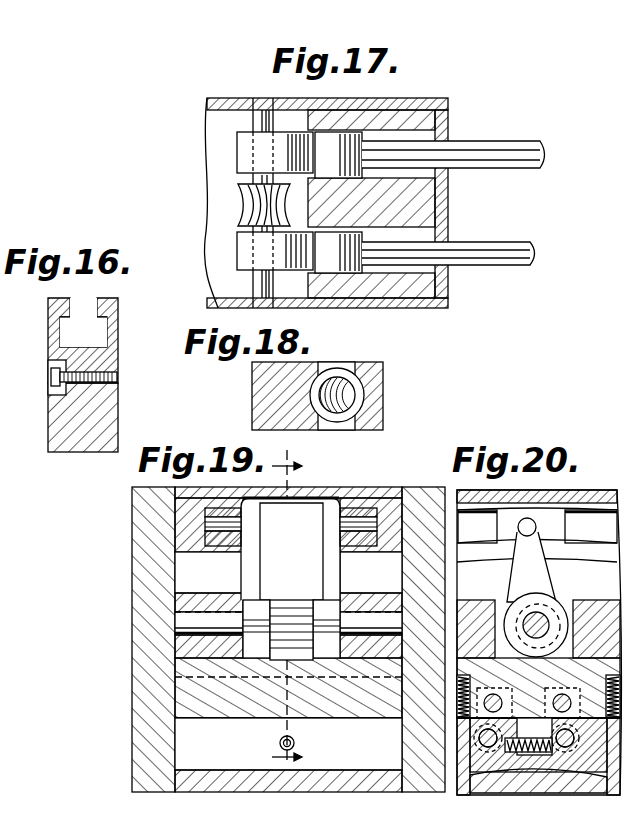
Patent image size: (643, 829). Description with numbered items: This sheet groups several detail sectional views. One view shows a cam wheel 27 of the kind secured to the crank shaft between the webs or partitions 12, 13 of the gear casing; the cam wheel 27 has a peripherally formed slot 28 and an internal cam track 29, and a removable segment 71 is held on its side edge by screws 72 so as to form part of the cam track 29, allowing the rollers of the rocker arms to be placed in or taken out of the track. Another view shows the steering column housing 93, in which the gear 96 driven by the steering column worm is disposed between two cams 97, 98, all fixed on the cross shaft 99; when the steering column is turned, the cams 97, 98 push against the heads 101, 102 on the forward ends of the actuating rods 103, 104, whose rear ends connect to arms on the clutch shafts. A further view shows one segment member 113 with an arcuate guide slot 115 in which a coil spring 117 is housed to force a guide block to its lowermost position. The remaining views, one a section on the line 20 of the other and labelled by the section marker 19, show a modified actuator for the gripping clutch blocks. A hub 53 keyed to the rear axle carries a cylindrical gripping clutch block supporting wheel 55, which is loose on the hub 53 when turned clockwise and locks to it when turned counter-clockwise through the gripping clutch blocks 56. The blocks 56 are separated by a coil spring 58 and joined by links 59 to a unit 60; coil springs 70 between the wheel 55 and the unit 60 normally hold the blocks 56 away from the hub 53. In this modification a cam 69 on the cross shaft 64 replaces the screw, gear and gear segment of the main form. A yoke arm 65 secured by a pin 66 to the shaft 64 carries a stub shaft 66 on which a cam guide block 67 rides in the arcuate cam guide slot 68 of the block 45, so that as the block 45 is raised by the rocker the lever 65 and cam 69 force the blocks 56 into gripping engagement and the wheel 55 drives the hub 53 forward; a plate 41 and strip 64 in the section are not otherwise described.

In FIG. 19, the web or partition 12 is at (132, 539).
In FIG. 19, the web or partition 13 is at (436, 496).
In FIG. 19, the section line 19 is at (8, 558).
In FIG. 19, the section line 20- 20 is at (287, 617).
In FIG. 16, the cam wheel 27 is at (55, 422).
In FIG. 16, the peripherally formed slot 28 is at (83, 306).
In FIG. 16, the internal cam track 29 is at (103, 338).
In FIG. 19, the plate 41 is at (288, 572).
In FIG. 20, the plate 41 is at (596, 562).
In FIG. 19, the block 45 is at (212, 493).
In FIG. 20, the block 45 is at (595, 497).
In FIG. 19, the hub 53 is at (208, 776).
In FIG. 20, the hub 53 is at (538, 783).
In FIG. 19, the gripping clutch block supporting wheel 55 is at (219, 601).
In FIG. 20, the gripping clutch block supporting wheel 55 is at (610, 616).
In FIG. 19, the gripping clutch block 56 is at (288, 744).
In FIG. 20, the gripping clutch block 56 is at (538, 756).
In FIG. 19, the coil spring 58 is at (295, 744).
In FIG. 20, the coil spring 58 is at (528, 736).
In FIG. 20, the link 59 is at (538, 688).
In FIG. 19, the unit 60 is at (266, 712).
In FIG. 20, the unit 60 is at (594, 652).
In FIG. 19, the cross shaft 64 is at (375, 616).
In FIG. 19, the yoke arm 65 is at (323, 544).
In FIG. 20, the yoke arm 65 is at (531, 567).
In FIG. 19, the pin / stub shaft 66 is at (243, 527).
In FIG. 20, the pin / stub shaft 66 is at (533, 522).
In FIG. 19, the cam guide block 67 is at (243, 513).
In FIG. 20, the cam guide block 67 is at (498, 528).
In FIG. 19, the arcuate cam guide slot 68 is at (226, 551).
In FIG. 20, the arcuate cam guide slot 68 is at (591, 526).
In FIG. 19, the cam 69 is at (296, 608).
In FIG. 20, the cam 69 is at (544, 606).
In FIG. 20, the coil spring 70 is at (536, 637).
In FIG. 16, the removable segment 71 is at (48, 346).
In FIG. 16, the screw 72 is at (118, 380).
In FIG. 17, the steering column housing 93 is at (447, 127).
In FIG. 17, the gear 96 is at (238, 196).
In FIG. 17, the cam 97 is at (237, 251).
In FIG. 17, the cam 98 is at (237, 146).
In FIG. 17, the cross shaft 99 is at (253, 119).
In FIG. 17, the head 101 is at (355, 247).
In FIG. 17, the head 102 is at (355, 147).
In FIG. 17, the actuating rod 103 is at (505, 246).
In FIG. 17, the actuating rod 104 is at (518, 143).
In FIG. 18, the segment member 113 is at (385, 404).
In FIG. 18, the arcuate guide slot 115 is at (350, 363).
In FIG. 18, the coil spring 117 is at (365, 391).